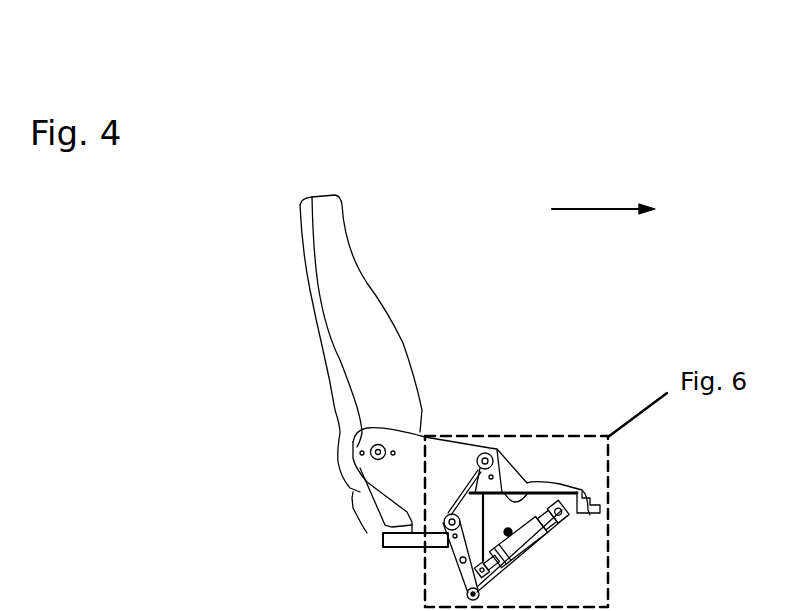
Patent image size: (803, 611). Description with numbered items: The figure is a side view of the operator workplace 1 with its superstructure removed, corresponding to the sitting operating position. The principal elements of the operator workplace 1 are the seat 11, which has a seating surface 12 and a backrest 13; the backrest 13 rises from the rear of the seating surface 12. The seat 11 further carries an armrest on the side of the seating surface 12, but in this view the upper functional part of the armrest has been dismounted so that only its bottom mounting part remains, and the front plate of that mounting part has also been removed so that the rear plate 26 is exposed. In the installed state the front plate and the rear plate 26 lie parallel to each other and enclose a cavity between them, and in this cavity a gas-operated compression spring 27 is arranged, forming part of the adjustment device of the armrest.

The operator workplace 1 is at (585, 163).
The seat 11 is at (334, 462).
The seating surface 12 is at (553, 492).
The backrest 13 is at (325, 235).
The rear plate 26 is at (518, 505).
The gas-operated compression spring 27 is at (530, 555).